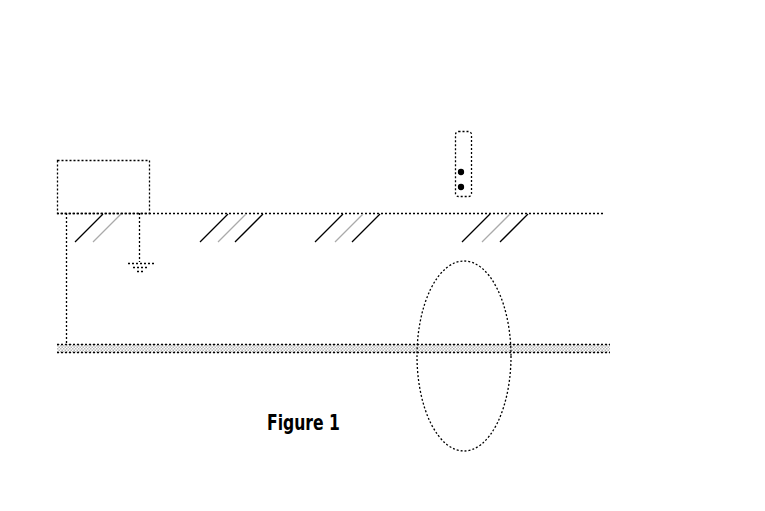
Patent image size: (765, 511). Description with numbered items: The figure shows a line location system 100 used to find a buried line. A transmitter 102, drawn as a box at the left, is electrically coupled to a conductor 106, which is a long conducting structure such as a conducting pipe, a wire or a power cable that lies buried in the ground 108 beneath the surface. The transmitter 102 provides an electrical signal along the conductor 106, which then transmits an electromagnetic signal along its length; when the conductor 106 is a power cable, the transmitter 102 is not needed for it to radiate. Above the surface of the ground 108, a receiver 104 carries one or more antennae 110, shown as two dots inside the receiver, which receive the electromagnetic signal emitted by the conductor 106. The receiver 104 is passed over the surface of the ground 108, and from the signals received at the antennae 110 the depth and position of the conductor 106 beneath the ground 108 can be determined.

The line location system 100 is at (156, 68).
The transmitter 102 is at (93, 159).
The receiver 104 is at (457, 150).
The conductor 106 is at (313, 352).
The ground 108 is at (573, 266).
The antennae 110 is at (457, 178).